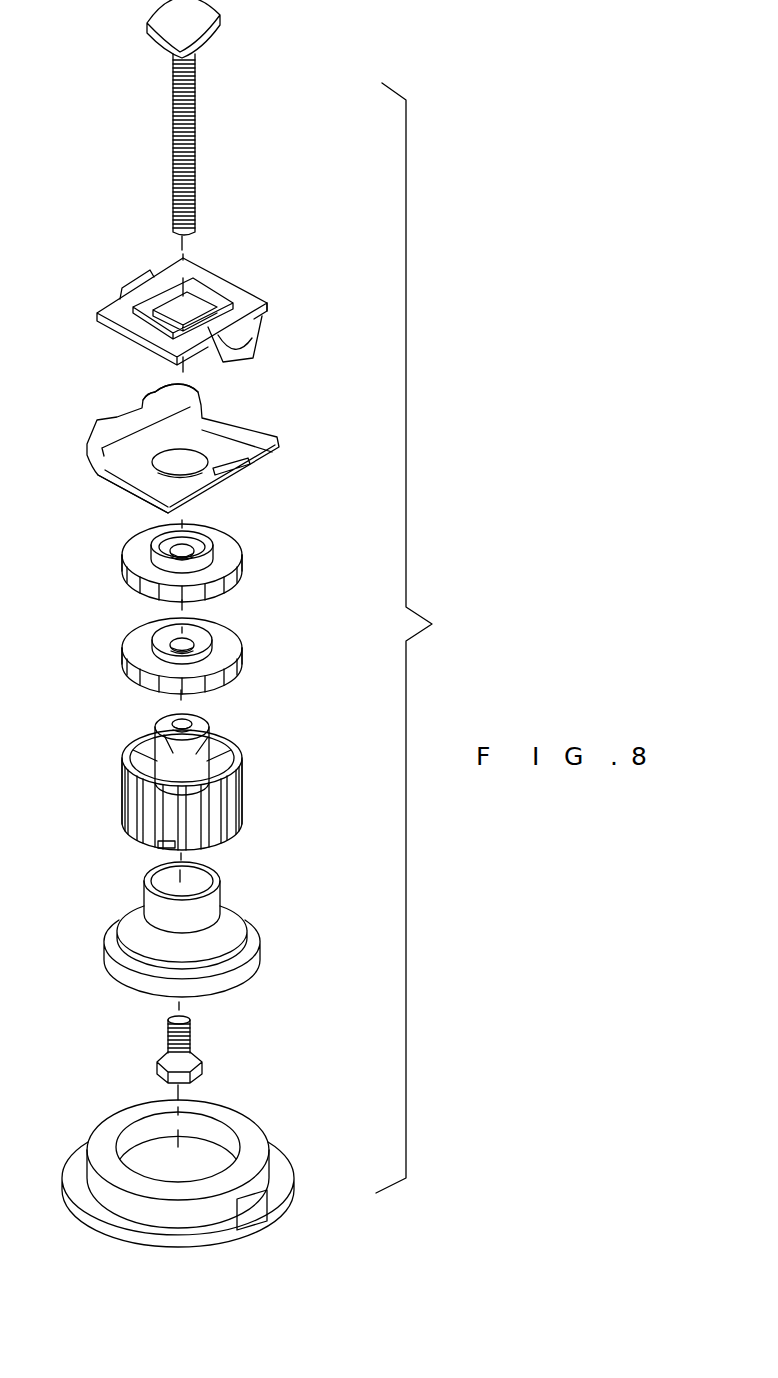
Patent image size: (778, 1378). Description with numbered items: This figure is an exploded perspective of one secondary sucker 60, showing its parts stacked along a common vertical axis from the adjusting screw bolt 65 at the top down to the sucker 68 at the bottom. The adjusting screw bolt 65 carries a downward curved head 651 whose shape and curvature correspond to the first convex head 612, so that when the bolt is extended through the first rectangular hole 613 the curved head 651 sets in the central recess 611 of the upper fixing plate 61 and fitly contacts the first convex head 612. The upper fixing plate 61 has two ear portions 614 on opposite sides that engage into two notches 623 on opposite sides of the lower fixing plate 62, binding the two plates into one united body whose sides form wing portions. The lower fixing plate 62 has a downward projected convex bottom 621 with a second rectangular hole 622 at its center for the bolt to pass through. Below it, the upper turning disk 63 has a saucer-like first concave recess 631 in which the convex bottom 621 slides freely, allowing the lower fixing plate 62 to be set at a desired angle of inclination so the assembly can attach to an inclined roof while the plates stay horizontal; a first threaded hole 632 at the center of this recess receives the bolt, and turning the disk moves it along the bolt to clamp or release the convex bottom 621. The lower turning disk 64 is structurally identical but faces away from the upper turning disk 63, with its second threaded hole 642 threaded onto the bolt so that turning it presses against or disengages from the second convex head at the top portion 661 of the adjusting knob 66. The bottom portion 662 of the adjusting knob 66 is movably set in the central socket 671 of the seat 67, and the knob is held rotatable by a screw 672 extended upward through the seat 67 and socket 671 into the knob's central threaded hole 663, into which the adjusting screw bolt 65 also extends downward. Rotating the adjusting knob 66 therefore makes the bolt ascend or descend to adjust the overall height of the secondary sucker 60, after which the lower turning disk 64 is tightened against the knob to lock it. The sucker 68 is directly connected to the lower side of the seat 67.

The secondary sucker 60 is at (426, 638).
The adjusting screw bolt 65 is at (225, 117).
The curved head 651 is at (220, 22).
The upper fixing plate 61 is at (189, 300).
The central recess 611 is at (200, 287).
The first convex head 612 is at (130, 320).
The first rectangular hole 613 is at (262, 313).
The ear portions 614 is at (250, 343).
The lower fixing plate 62 is at (164, 439).
The convex bottom 621 is at (187, 455).
The second rectangular hole 622 is at (175, 477).
The notches 623 is at (128, 410).
The upper turning disk 63 is at (179, 546).
The first concave recess 631 is at (203, 543).
The first threaded hole 632 is at (152, 550).
The lower turning disk 64 is at (177, 652).
The second threaded hole 642 is at (173, 645).
The adjusting knob 66 is at (176, 772).
The top portion 661 is at (143, 738).
The tab 662 is at (150, 840).
The central threaded hole 663 is at (173, 717).
The seat 67 is at (181, 928).
The central socket 671 is at (158, 882).
The screw 672 is at (190, 1043).
The sucker 68 is at (287, 1182).